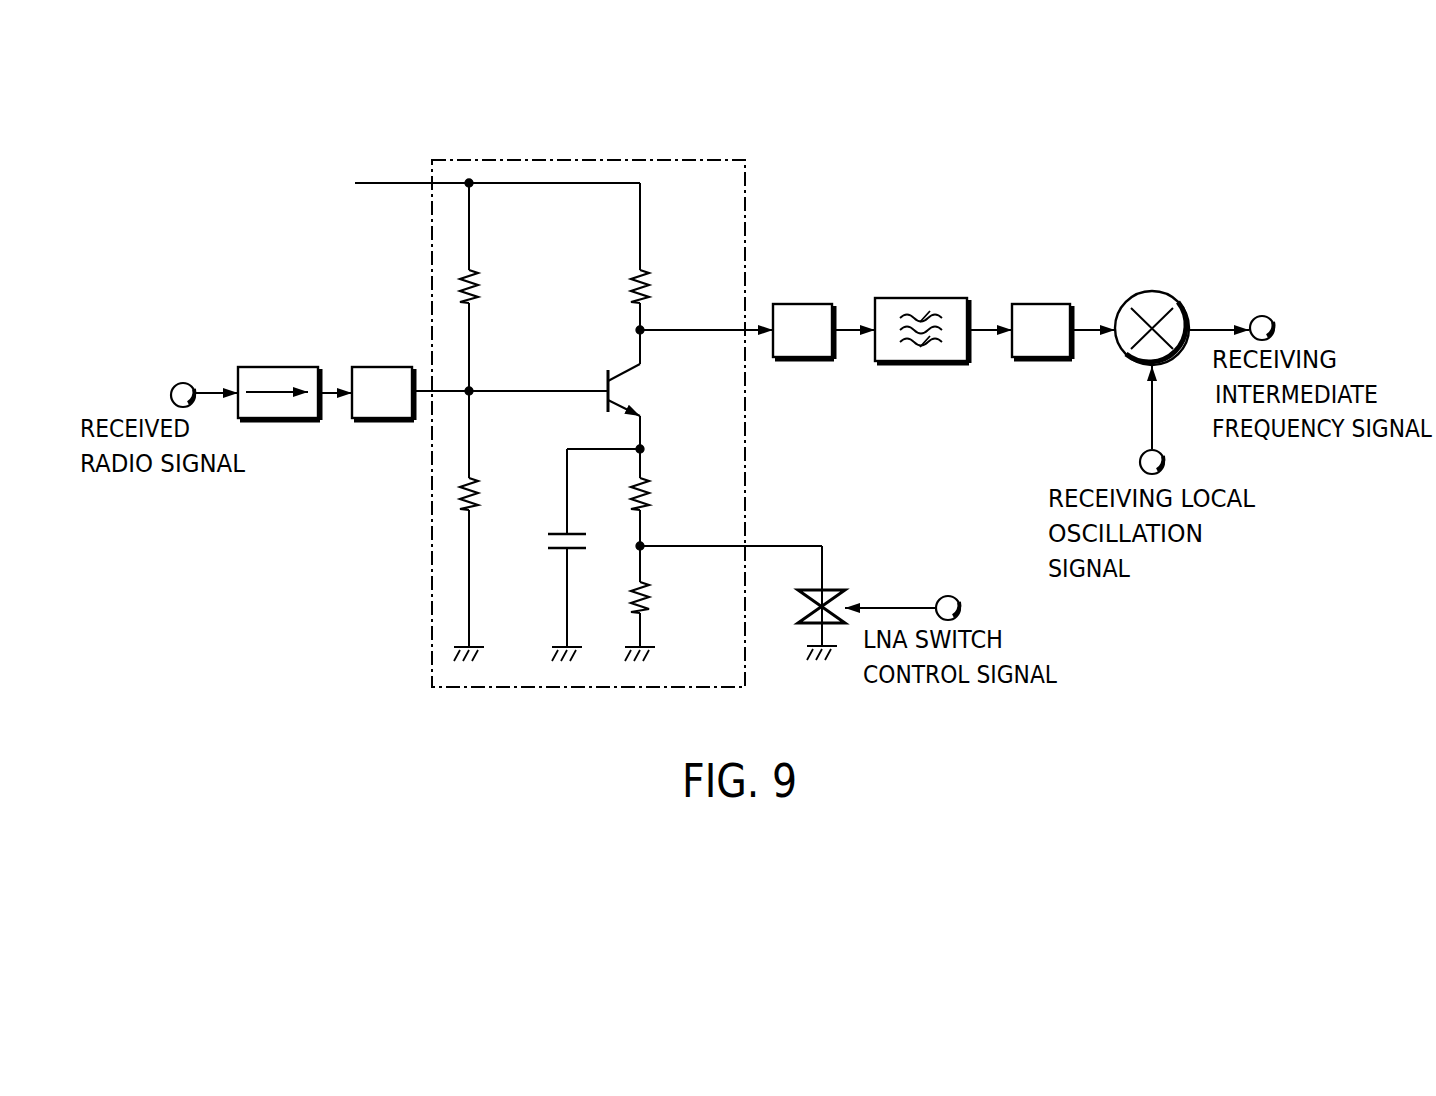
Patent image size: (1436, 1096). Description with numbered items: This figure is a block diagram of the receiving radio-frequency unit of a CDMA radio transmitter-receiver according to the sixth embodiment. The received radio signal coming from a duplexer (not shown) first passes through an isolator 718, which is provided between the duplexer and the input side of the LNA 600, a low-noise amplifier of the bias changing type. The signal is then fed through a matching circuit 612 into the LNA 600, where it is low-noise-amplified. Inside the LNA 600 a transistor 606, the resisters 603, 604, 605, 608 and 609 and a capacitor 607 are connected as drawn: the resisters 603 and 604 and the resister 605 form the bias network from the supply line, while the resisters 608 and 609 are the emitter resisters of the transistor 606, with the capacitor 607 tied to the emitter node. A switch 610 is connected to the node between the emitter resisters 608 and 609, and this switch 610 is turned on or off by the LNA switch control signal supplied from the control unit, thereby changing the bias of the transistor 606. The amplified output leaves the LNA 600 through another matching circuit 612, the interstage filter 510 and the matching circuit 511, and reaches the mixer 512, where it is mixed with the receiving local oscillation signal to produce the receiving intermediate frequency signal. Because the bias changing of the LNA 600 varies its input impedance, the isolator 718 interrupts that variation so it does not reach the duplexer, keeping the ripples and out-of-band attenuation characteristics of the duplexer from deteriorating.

The isolator 718 is at (300, 418).
The matching circuit 612 is at (382, 367).
The LNA 600 is at (572, 158).
The resister 603 is at (484, 289).
The resister 604 is at (484, 496).
The resister 605 is at (654, 289).
The transistor 606 is at (633, 391).
The capacitor 607 is at (544, 548).
The emitter resister 608 is at (654, 496).
The emitter resister 609 is at (654, 599).
The switch 610 is at (838, 588).
The interstage filter 510 is at (934, 298).
The matching circuit 511 is at (1039, 304).
The mixer 512 is at (1151, 290).